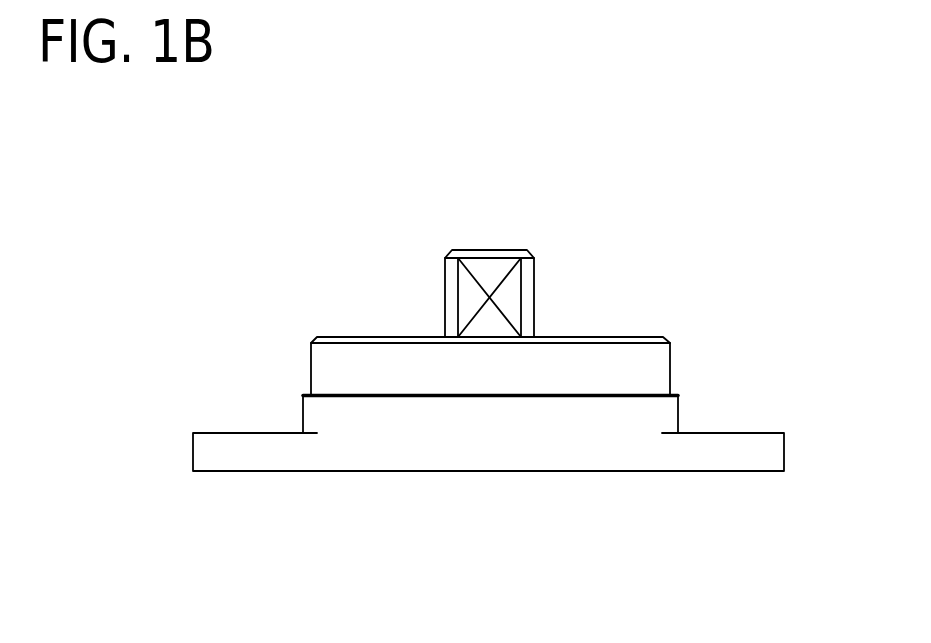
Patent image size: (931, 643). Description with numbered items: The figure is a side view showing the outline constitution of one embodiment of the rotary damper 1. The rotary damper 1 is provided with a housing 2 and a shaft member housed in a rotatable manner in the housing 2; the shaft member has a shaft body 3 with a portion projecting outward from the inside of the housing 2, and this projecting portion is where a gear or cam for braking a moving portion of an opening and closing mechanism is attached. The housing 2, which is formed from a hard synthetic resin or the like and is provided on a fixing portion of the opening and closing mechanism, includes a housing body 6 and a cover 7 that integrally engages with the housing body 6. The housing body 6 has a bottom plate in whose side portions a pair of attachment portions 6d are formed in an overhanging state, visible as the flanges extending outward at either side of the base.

The rotary damper 1 is at (672, 214).
The housing 2 is at (777, 285).
The shaft body 3 is at (482, 268).
The housing body 6 is at (663, 420).
The attachment portion 6d is at (220, 443).
The cover 7 is at (635, 372).